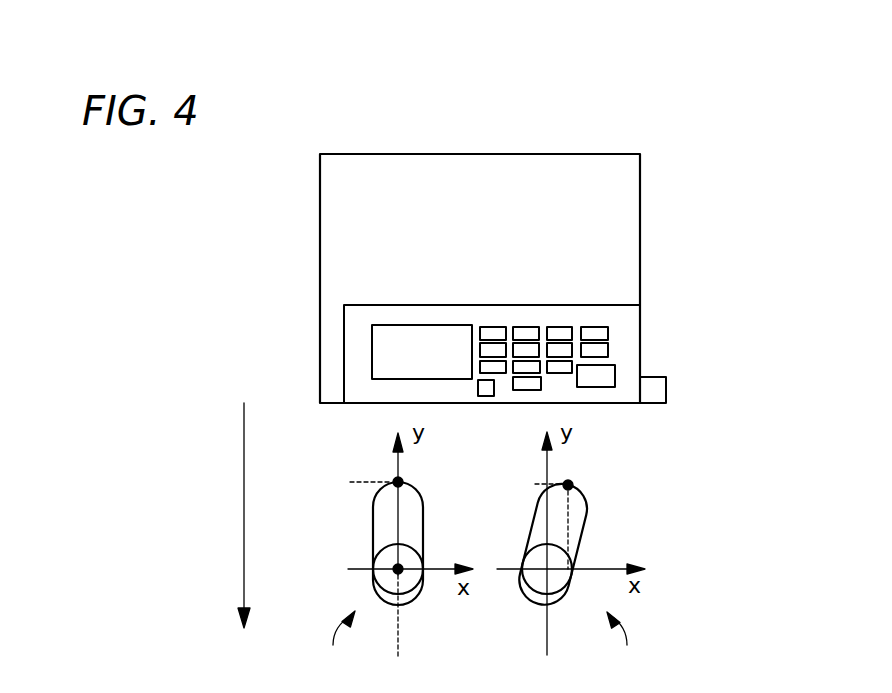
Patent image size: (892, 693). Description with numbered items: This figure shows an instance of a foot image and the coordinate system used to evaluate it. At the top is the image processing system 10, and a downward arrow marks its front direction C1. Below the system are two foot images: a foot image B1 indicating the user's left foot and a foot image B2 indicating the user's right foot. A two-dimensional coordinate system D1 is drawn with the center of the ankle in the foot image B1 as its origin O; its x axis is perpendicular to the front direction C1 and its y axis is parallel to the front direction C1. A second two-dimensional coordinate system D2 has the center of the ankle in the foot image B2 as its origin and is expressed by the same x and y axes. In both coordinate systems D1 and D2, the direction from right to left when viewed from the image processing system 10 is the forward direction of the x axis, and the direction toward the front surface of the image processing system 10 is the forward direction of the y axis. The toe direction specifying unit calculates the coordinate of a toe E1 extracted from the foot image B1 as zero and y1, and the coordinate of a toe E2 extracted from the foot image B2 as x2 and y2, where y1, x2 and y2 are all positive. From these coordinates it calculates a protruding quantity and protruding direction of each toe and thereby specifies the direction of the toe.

The image processing system 10 is at (320, 228).
The front direction C1 is at (244, 465).
The foot image B1 is at (413, 532).
The foot image B2 is at (535, 600).
The toe E1 is at (392, 480).
The toe E2 is at (572, 483).
The y coordinate of toe E1 y1 is at (357, 480).
The y coordinate of toe E2 y2 is at (531, 485).
The x coordinate of toe E2 x2 is at (587, 579).
The origin O is at (388, 581).
The two-dimensional coordinate system D1 is at (332, 644).
The two-dimensional coordinate system D2 is at (627, 645).